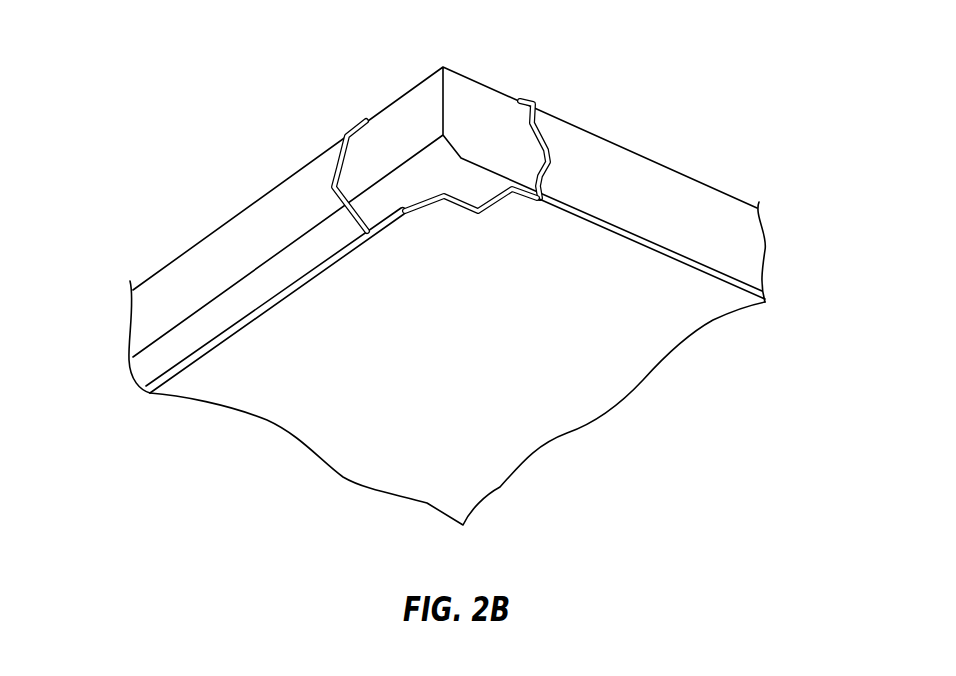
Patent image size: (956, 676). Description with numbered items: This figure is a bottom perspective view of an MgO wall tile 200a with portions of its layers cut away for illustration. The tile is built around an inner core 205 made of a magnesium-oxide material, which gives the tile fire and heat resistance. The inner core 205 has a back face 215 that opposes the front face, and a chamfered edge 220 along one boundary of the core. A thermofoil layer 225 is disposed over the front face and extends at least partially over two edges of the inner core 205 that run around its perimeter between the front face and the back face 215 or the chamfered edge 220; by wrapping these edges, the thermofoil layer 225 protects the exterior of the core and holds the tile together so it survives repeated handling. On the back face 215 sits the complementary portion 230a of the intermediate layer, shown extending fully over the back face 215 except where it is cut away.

The MgO wall tile 200a is at (126, 112).
The inner core 205 is at (473, 108).
The back face 215 is at (476, 177).
The chamfered edge 220 is at (397, 186).
The thermofoil layer 225 is at (693, 209).
The complementary portion 230a is at (662, 336).